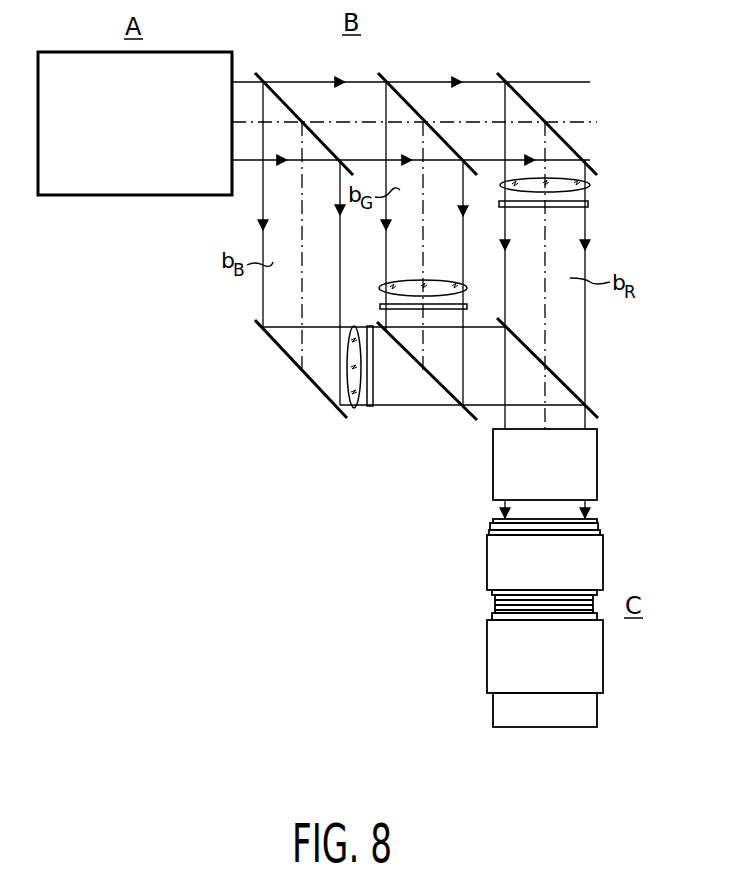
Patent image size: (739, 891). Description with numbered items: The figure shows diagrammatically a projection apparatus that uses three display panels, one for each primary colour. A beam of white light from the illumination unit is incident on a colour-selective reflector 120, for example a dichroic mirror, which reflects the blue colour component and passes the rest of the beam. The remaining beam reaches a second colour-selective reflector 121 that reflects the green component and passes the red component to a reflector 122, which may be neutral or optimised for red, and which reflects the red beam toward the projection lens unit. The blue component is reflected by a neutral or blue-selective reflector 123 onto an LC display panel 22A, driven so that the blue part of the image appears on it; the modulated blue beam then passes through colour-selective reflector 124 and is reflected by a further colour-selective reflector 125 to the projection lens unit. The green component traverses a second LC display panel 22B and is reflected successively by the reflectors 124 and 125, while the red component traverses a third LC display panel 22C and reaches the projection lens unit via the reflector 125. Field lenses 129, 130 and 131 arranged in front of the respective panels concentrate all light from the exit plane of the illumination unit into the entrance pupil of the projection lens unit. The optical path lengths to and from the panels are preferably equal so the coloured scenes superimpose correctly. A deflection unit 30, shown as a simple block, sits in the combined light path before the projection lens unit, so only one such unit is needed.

The colour-selective reflector 120 is at (282, 98).
The second colour-selective reflector 121 is at (403, 98).
The reflector 122 is at (523, 98).
The reflector 123 is at (307, 375).
The colour-selective reflector 124 is at (438, 385).
The colour-selective reflector 125 is at (570, 385).
The field lens 129 is at (352, 417).
The field lens 130 is at (387, 288).
The field lens 131 is at (590, 185).
The LC display panel 22A is at (373, 407).
The second LC display panel 22B is at (469, 307).
The third LC display panel 22C is at (590, 204).
The deflection unit 30 is at (597, 465).